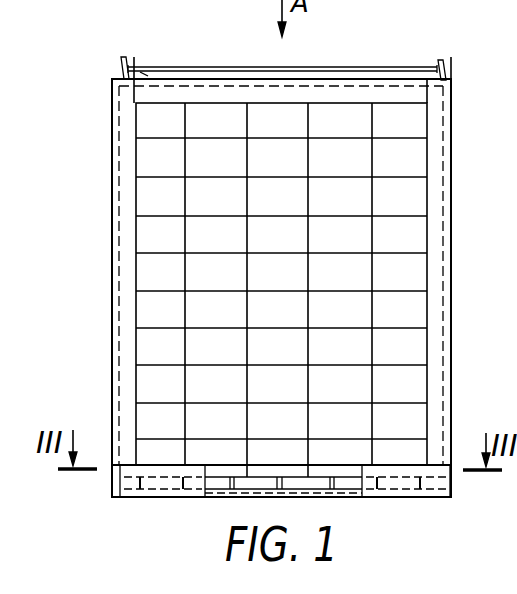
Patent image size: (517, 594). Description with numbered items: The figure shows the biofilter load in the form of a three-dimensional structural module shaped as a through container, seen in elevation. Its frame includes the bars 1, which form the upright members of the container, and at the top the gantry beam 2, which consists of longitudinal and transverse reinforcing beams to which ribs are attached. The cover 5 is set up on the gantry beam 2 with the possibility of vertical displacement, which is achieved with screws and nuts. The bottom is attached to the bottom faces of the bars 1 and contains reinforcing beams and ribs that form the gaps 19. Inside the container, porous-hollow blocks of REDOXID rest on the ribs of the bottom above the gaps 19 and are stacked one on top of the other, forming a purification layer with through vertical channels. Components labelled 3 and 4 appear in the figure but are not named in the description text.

The bars 1 is at (118, 224).
The gantry beam 2 is at (147, 95).
The top beam 3 is at (218, 96).
The right corner post 4 is at (446, 82).
The cover 5 is at (412, 72).
The gaps 19 is at (516, 221).